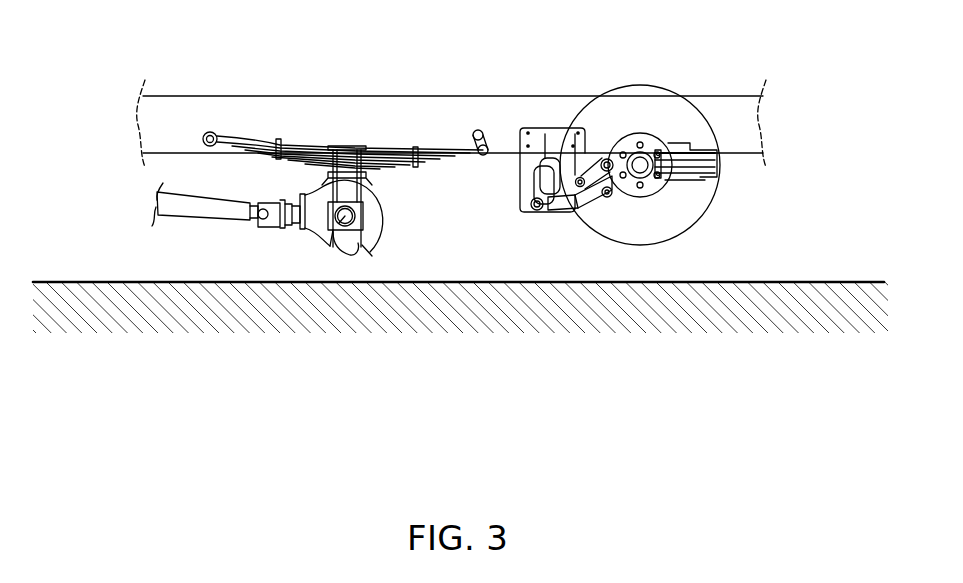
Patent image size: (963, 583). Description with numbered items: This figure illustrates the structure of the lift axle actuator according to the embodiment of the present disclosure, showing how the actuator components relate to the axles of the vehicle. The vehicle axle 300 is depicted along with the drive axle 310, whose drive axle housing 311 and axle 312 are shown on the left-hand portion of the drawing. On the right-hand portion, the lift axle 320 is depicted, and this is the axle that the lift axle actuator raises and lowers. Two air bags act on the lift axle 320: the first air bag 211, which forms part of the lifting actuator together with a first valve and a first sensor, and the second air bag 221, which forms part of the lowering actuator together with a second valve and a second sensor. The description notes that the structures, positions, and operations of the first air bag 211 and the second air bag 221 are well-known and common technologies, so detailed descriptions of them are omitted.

The vehicle axle 300 is at (438, 107).
The drive axle 310 is at (328, 242).
The drive axle housing 311 is at (365, 242).
The axle 312 is at (193, 208).
The first air bag 211 is at (550, 213).
The lift axle 320 is at (657, 183).
The second air bag 221 is at (712, 167).